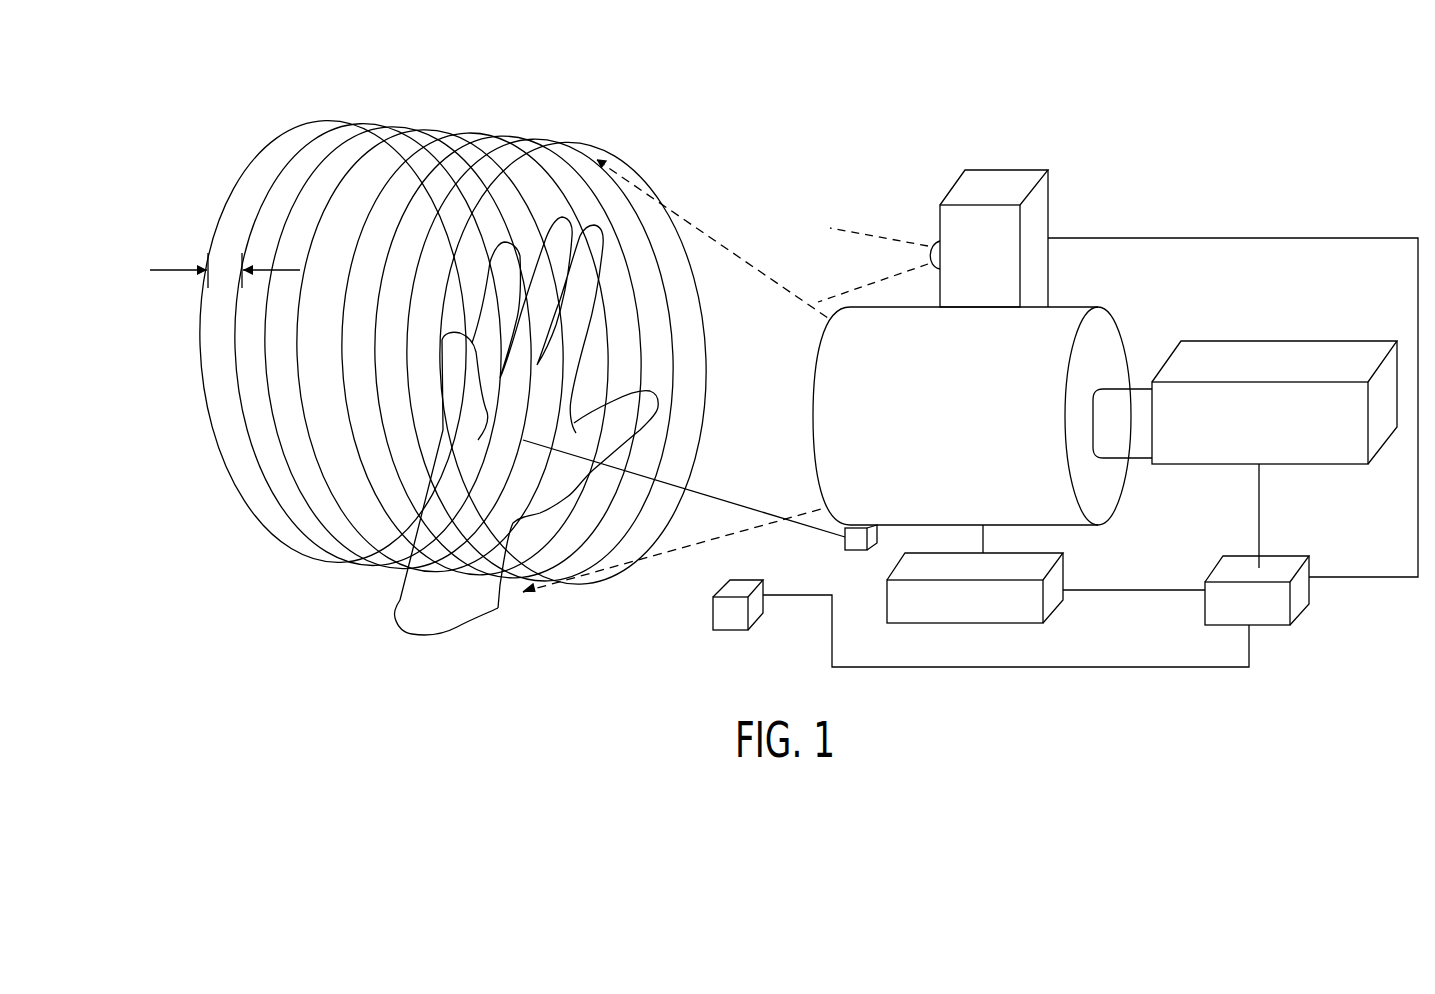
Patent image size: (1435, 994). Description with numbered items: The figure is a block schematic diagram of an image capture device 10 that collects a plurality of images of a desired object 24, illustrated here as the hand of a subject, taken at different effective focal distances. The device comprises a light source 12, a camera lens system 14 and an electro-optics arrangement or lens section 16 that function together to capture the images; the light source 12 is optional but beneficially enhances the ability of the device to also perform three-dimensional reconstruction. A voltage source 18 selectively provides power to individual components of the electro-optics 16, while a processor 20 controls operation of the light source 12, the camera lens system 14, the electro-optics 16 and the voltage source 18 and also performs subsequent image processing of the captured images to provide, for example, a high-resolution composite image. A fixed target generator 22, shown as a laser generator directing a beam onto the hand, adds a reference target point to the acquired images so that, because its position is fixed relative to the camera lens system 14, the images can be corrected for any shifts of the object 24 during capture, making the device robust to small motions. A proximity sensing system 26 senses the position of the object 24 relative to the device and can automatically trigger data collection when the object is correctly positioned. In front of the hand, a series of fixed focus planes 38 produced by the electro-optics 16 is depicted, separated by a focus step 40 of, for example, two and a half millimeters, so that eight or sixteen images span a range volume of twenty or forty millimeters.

The image capture device 10 is at (1150, 132).
The light source 12 is at (1048, 210).
The camera lens system 14 is at (1290, 341).
The electro-optics 16 is at (1072, 307).
The voltage source 18 is at (964, 626).
The processor 20 is at (1272, 627).
The fixed target generator 22 is at (855, 551).
The object 24 is at (399, 600).
The proximity sensing system 26 is at (712, 612).
The focus planes 38 is at (478, 128).
The focus step 40 is at (180, 270).